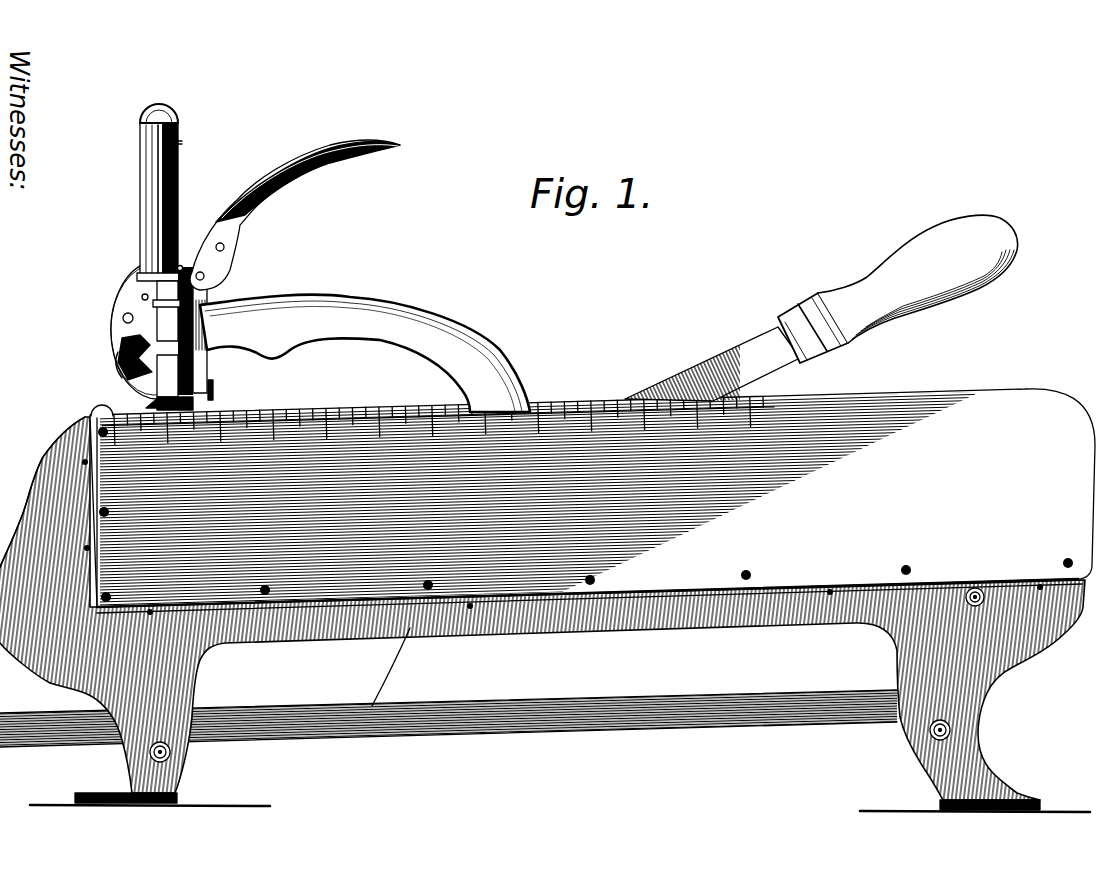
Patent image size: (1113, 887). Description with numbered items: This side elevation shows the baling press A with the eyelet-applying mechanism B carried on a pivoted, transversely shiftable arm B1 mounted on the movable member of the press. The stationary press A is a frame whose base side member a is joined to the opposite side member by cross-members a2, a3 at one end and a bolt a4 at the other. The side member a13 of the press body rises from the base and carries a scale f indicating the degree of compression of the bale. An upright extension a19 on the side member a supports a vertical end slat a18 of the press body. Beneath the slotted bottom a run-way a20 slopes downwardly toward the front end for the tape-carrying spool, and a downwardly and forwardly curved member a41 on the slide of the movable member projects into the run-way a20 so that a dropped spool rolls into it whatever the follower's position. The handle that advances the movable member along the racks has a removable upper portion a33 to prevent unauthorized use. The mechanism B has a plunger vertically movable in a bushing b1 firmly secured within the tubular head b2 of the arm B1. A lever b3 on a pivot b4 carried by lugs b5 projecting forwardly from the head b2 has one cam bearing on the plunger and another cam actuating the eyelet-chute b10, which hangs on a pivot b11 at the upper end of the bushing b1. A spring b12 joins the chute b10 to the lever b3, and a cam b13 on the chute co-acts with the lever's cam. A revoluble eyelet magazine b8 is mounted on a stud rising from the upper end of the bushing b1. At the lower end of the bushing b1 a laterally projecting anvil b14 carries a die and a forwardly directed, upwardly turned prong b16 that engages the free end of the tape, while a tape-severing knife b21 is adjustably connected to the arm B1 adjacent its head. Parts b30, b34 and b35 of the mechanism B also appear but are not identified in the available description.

The press A is at (588, 502).
The base side member a is at (1046, 648).
The bolt or cross-member a2 is at (952, 732).
The bolt or cross-member a3 is at (980, 588).
The bolt a4 is at (178, 760).
The side member of press body a13 is at (540, 499).
The vertical end slat a18 is at (90, 412).
The upright extension a19 is at (42, 461).
The run-way a20 is at (553, 712).
The removable portion of handle a33 is at (716, 372).
The curved member a41 is at (410, 672).
The scale f is at (547, 406).
The eyelet-applying mechanism B is at (118, 330).
The arm B1 is at (388, 341).
The bushing b1 is at (206, 297).
The tubular head b2 is at (169, 376).
The lever b3 is at (262, 196).
The pivot b4 is at (142, 296).
The lugs b5 is at (167, 319).
The revoluble magazine b8 is at (142, 180).
The eyelet-chute b10 is at (123, 319).
The pivot b11 is at (180, 268).
The spring b12 is at (121, 348).
The cam b13 is at (116, 358).
The anvil b14 is at (200, 404).
The prong b16 is at (148, 404).
The tape-severing knife b21 is at (214, 390).
The collar b30 is at (143, 276).
The knob b34 is at (170, 110).
The ring b35 is at (191, 134).